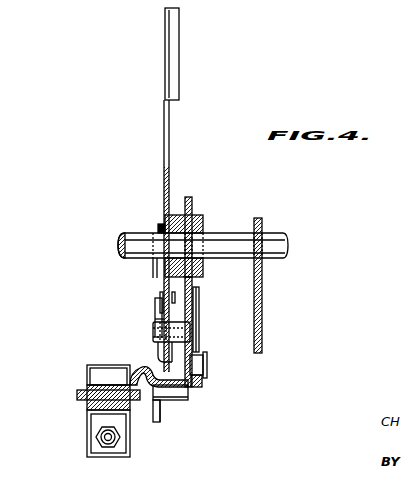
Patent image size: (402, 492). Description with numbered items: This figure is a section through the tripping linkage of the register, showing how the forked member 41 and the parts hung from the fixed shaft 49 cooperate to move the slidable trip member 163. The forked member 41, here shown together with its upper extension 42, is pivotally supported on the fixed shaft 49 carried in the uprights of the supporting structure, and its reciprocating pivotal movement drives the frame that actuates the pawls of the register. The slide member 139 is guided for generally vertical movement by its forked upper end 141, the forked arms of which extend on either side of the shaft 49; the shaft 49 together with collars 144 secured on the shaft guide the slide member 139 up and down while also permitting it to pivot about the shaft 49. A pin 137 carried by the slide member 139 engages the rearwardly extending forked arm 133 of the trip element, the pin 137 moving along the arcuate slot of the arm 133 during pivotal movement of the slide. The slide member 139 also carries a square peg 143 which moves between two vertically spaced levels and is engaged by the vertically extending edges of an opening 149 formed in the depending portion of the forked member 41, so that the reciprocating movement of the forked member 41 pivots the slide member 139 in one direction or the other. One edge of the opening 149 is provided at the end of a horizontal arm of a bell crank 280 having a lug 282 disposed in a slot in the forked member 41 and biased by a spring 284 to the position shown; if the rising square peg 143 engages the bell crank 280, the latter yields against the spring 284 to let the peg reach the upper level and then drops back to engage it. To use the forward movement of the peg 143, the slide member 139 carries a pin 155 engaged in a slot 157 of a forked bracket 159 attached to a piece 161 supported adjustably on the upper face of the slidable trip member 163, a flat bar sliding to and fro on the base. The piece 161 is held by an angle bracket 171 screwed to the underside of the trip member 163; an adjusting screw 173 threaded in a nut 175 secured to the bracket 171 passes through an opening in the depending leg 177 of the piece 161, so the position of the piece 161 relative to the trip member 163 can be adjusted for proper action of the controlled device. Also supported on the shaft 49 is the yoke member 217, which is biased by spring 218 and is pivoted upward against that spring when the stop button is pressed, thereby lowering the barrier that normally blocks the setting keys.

The handle 42 is at (166, 59).
The forked member 41 is at (164, 143).
The fixed shaft 49 is at (135, 233).
The collars 144 is at (176, 215).
The upper end of the slide member 141 is at (192, 203).
The spring 218 is at (160, 226).
The yoke member 217 is at (262, 294).
The slide member 139 is at (193, 285).
The forked arm 133 is at (200, 348).
The pin 137 is at (207, 367).
The lug 282 is at (161, 297).
The bell crank 280 is at (155, 309).
The spring 284 is at (155, 319).
The square peg 143 is at (153, 333).
The opening 149 is at (170, 350).
The piece 161 is at (100, 383).
The angle bracket 171 is at (93, 410).
The slidable trip member 163 is at (77, 397).
The depending leg 177 is at (130, 448).
The nut 175 is at (98, 440).
The adjusting screw 173 is at (108, 447).
The pin 155 is at (188, 393).
The slot 157 is at (163, 408).
The forked bracket 159 is at (160, 418).